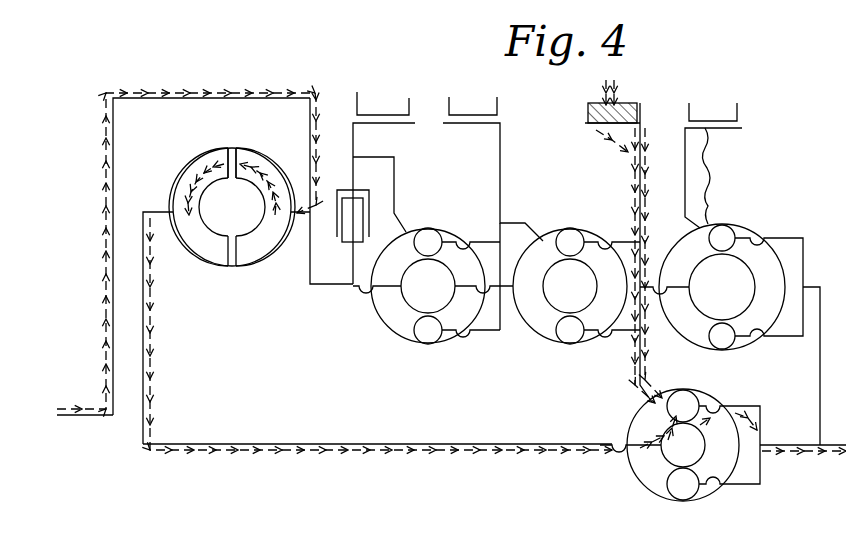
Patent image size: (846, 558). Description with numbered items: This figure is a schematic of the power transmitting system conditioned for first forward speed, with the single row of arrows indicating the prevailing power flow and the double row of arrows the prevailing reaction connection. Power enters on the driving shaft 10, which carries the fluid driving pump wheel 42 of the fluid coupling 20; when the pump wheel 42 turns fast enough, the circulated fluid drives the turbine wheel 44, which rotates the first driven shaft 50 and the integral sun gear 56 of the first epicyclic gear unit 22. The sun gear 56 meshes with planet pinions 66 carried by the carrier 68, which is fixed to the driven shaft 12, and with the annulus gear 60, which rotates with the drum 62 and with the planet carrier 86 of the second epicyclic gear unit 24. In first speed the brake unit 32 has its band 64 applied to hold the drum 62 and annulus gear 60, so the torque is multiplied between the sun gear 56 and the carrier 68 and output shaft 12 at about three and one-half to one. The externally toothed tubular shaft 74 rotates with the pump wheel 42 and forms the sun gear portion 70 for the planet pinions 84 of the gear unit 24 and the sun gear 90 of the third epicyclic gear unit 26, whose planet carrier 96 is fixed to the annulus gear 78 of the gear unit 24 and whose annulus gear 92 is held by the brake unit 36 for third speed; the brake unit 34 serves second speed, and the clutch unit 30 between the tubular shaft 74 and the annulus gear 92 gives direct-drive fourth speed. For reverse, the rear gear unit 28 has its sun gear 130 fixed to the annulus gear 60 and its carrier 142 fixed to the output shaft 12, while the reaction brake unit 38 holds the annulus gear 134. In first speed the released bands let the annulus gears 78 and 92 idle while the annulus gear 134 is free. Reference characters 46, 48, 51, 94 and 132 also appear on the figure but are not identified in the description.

The driving shaft 10 is at (72, 418).
The driven shaft 12 is at (826, 444).
The fluid turbine unit 20 is at (234, 146).
The first epicyclic gear unit 22 is at (655, 428).
The second epicyclic gear unit 24 is at (544, 236).
The third epicyclic gear unit 26 is at (412, 234).
The reverse epicyclic gear unit 28 is at (766, 262).
The clutch unit 30 is at (358, 188).
The brake unit 32 is at (584, 122).
The brake unit 34 is at (503, 114).
The brake unit 36 is at (413, 108).
The reaction brake unit 38 is at (746, 123).
The fluid driving pump wheel 42 is at (256, 156).
The driven turbine wheel 44 is at (208, 156).
The slot 46 is at (304, 148).
The inlet conduit 48 is at (115, 180).
The first driven shaft 50 is at (200, 443).
The left return conduit 51 is at (148, 326).
The sun gear 56 is at (696, 460).
The annulus gear 60 is at (644, 478).
The drum 62 is at (598, 130).
The brake band 64 is at (598, 114).
The planet pinions 66 is at (696, 400).
The planet carrier 68 is at (750, 488).
The sun gear portion 70 is at (556, 304).
The tubular shaft 74 is at (312, 288).
The annulus gear 78 is at (538, 332).
The planet pinions 84 is at (556, 252).
The planet carrier 86 is at (616, 336).
The sun gear 90 is at (412, 300).
The annulus gear 92 is at (380, 160).
The idler gears 94 is at (414, 252).
The planet carrier 96 is at (486, 334).
The sun gear 130 is at (752, 286).
The idler gears 132 is at (728, 232).
The annulus gear 134 is at (713, 178).
The carrier 142 is at (790, 236).